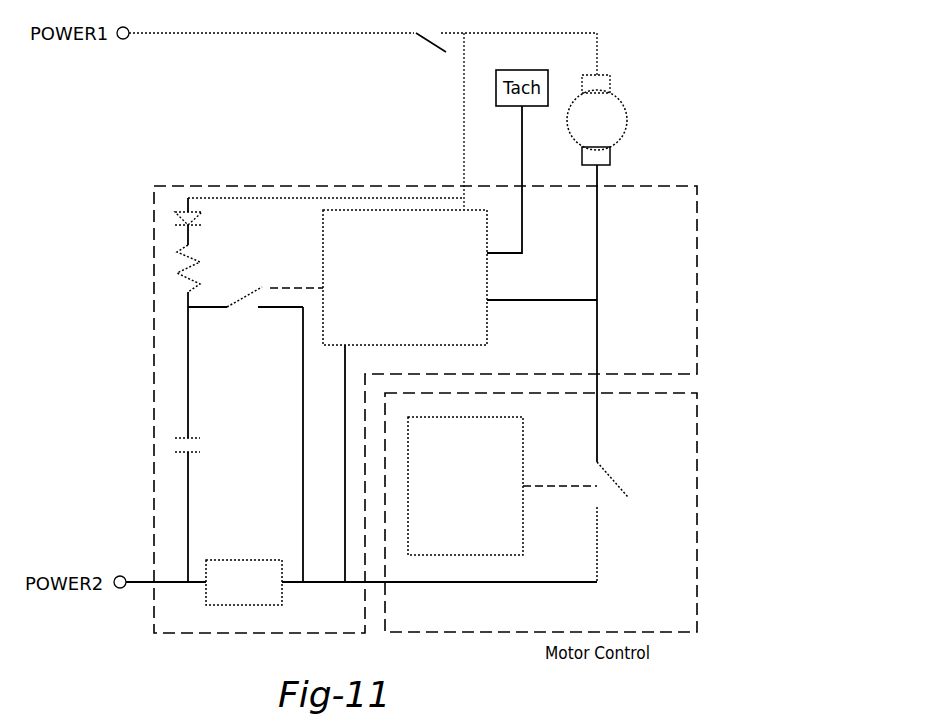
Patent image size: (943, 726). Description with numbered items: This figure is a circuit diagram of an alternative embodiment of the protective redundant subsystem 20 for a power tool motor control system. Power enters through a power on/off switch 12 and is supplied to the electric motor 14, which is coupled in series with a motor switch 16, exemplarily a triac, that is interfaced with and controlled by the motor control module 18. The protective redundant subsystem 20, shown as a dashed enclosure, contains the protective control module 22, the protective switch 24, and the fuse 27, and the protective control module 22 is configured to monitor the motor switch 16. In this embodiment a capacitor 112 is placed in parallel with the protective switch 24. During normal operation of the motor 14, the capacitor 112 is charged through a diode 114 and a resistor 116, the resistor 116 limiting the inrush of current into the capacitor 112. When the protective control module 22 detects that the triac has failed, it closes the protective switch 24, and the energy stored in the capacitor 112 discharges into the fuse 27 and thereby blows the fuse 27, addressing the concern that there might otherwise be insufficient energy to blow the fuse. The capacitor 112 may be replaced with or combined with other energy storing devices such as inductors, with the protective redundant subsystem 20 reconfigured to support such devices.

The power on/off switch 12 is at (419, 38).
The electric motor 14 is at (627, 120).
The motor switch 16 is at (612, 480).
The motor control module 18 is at (498, 556).
The protective redundant subsystem 20 is at (338, 185).
The protective control module 22 is at (488, 331).
The protective switch 24 is at (247, 295).
The fuse 27 is at (245, 558).
The capacitor 112 is at (197, 436).
The diode 114 is at (175, 215).
The resistor 116 is at (178, 272).